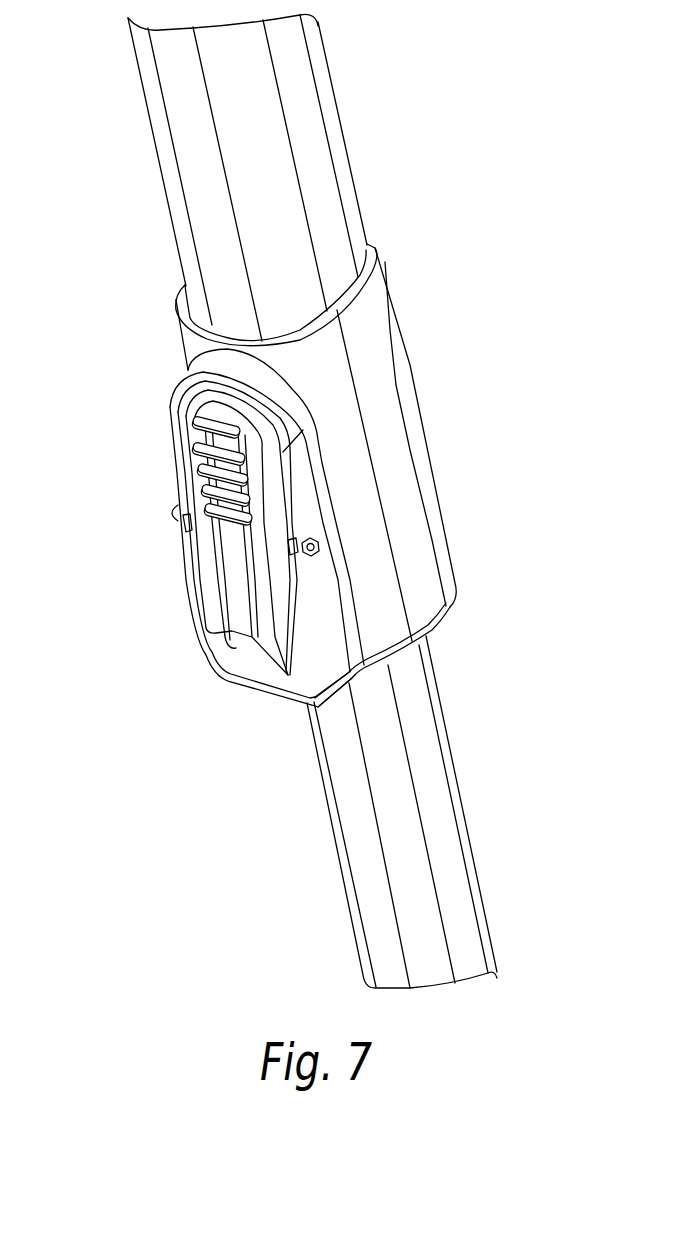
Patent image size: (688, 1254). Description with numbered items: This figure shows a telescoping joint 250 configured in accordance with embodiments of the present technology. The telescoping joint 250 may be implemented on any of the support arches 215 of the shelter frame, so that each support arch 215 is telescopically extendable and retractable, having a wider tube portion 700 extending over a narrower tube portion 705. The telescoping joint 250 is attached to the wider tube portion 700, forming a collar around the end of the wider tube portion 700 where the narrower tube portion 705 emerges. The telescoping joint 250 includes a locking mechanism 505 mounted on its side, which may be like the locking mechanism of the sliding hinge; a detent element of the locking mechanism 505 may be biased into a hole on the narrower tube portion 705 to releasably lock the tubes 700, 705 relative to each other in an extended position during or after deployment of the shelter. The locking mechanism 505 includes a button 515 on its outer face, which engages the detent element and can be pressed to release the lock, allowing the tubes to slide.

The support arch 215 is at (278, 501).
The wider tube portion 700 is at (178, 207).
The narrower tube portion 705 is at (352, 818).
The telescoping joint 250 is at (372, 450).
The locking mechanism 505 is at (136, 505).
The button 515 is at (236, 590).